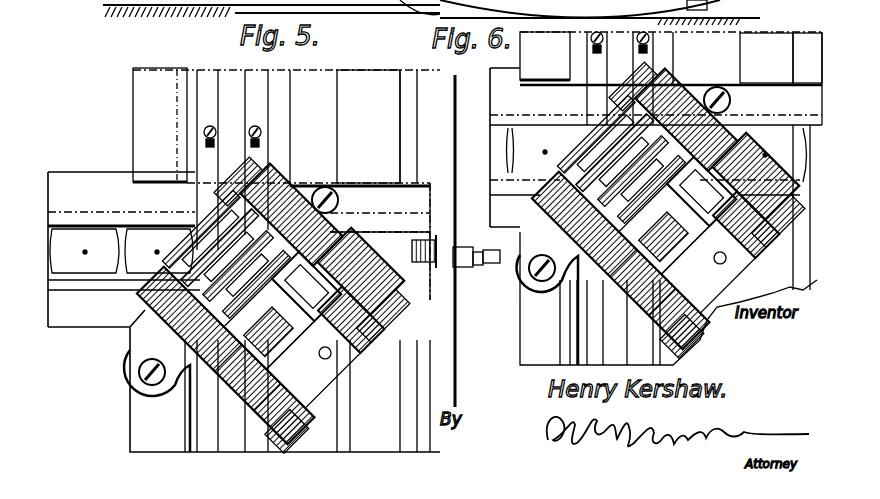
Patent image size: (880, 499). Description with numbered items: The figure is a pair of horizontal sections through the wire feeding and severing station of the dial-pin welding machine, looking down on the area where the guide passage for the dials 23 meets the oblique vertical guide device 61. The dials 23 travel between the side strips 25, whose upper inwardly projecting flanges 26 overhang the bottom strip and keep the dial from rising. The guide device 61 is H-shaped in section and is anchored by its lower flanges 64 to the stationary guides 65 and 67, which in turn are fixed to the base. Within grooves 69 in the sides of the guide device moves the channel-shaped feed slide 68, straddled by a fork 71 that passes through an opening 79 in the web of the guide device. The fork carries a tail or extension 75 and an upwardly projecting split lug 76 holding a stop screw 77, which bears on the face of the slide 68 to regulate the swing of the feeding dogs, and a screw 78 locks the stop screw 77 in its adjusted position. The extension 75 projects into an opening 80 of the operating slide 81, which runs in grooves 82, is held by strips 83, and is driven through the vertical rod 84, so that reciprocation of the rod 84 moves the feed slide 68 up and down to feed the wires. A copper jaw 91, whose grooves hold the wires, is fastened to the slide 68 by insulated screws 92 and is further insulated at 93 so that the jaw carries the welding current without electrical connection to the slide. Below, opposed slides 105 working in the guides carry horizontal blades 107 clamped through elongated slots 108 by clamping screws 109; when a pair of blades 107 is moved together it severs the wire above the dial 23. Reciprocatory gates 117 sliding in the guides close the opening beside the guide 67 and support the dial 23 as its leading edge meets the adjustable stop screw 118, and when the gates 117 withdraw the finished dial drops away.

In FIG. 5, the dial 23 is at (102, 240).
In FIG. 6, the dial 23 is at (520, 140).
In FIG. 5, the side strip 25 is at (52, 175).
In FIG. 6, the side strip 25 is at (520, 115).
In FIG. 5, the inwardly projecting flange 26 is at (65, 222).
In FIG. 6, the inwardly projecting flange 26 is at (503, 176).
In FIG. 5, the vertical guide device 61 is at (160, 355).
In FIG. 5, the flange 64 is at (112, 386).
In FIG. 6, the flange 64 is at (505, 304).
In FIG. 5, the stationary guide 65 is at (150, 83).
In FIG. 6, the stationary guide 65 is at (540, 312).
In FIG. 6, the stationary guide 67 is at (800, 45).
In FIG. 5, the slide 68 is at (195, 342).
In FIG. 5, the groove 69 is at (165, 258).
In FIG. 6, the groove 69 is at (553, 170).
In FIG. 5, the fork 71 is at (390, 255).
In FIG. 5, the tail or extension 75 is at (335, 362).
In FIG. 5, the split lug 76 is at (328, 307).
In FIG. 5, the stop screw 77 is at (328, 319).
In FIG. 5, the screw 78 is at (288, 352).
In FIG. 6, the opening 79 is at (708, 217).
In FIG. 5, the opening 80 is at (330, 378).
In FIG. 5, the operating slide 81 is at (325, 395).
In FIG. 6, the operating slide 81 is at (745, 263).
In FIG. 5, the groove 82 is at (300, 415).
In FIG. 5, the strip 83 is at (295, 432).
In FIG. 6, the strip 83 is at (700, 330).
In FIG. 6, the vertical rod 84 is at (738, 270).
In FIG. 6, the jaw 91 is at (585, 165).
In FIG. 6, the screw 92 is at (560, 232).
In FIG. 6, the insulation 93 is at (565, 240).
In FIG. 5, the slide 105 is at (185, 110).
In FIG. 5, the blade 107 is at (205, 158).
In FIG. 6, the blade 107 is at (594, 325).
In FIG. 5, the elongated slot 108 is at (205, 134).
In FIG. 5, the clamping screw 109 is at (207, 140).
In FIG. 5, the reciprocatory gate 117 is at (372, 90).
In FIG. 6, the reciprocatory gate 117 is at (764, 45).
In FIG. 6, the stop screw 118 is at (484, 268).